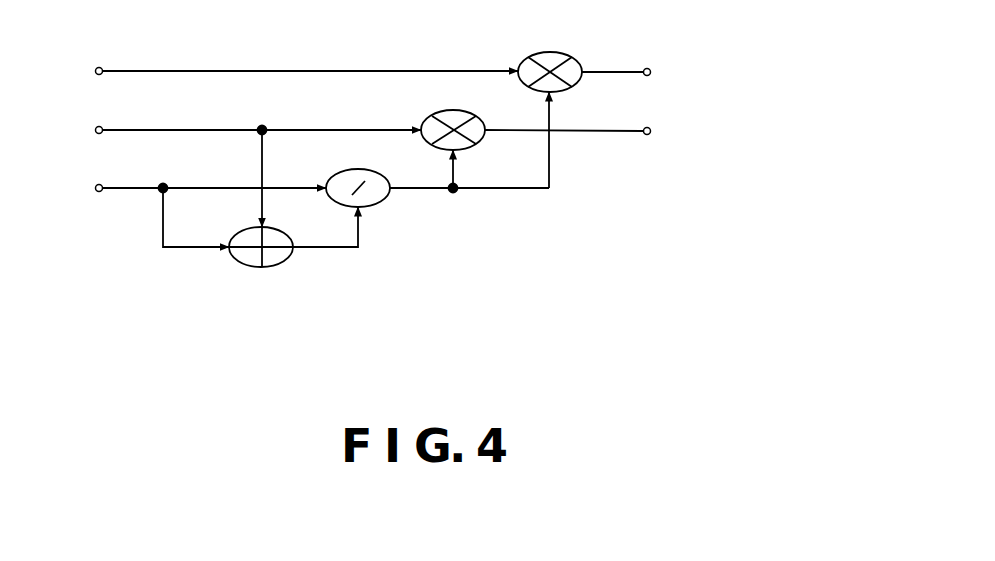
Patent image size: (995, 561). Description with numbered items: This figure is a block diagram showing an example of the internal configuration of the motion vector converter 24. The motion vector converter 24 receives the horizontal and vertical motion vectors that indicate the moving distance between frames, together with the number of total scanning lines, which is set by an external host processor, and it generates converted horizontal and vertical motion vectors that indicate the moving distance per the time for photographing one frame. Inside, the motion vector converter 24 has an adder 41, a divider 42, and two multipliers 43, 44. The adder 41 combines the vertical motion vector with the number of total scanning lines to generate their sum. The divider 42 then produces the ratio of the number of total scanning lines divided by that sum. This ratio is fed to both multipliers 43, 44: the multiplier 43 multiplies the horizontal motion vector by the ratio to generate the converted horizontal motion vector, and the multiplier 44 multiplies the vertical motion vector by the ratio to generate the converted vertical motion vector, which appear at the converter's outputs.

The motion vector converter 24 is at (424, 196).
The adder 41 is at (236, 231).
The divider 42 is at (338, 169).
The multiplier 43 is at (539, 51).
The multiplier 44 is at (440, 111).